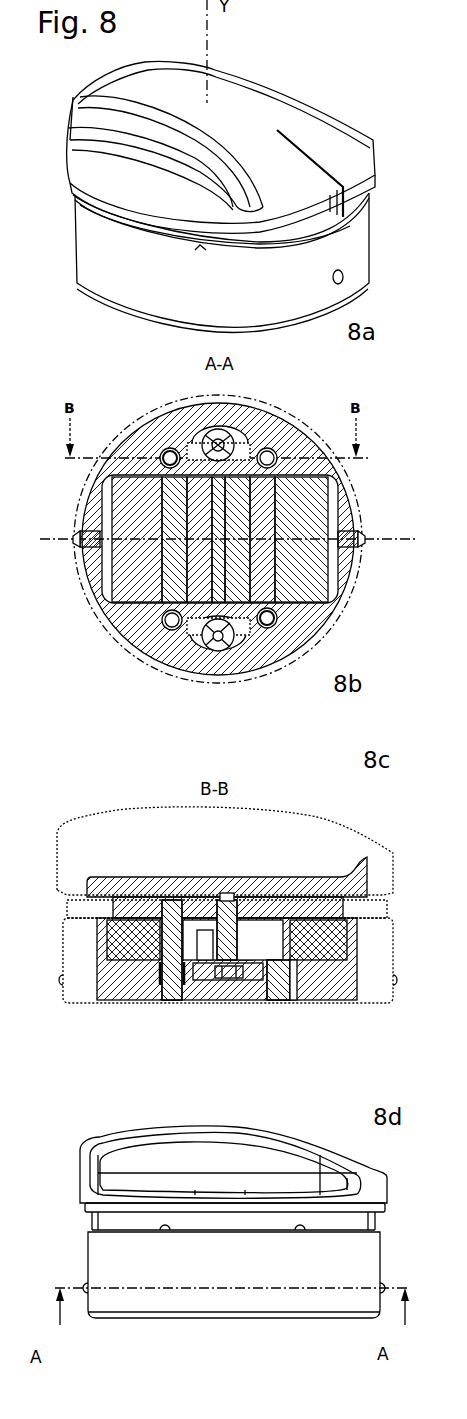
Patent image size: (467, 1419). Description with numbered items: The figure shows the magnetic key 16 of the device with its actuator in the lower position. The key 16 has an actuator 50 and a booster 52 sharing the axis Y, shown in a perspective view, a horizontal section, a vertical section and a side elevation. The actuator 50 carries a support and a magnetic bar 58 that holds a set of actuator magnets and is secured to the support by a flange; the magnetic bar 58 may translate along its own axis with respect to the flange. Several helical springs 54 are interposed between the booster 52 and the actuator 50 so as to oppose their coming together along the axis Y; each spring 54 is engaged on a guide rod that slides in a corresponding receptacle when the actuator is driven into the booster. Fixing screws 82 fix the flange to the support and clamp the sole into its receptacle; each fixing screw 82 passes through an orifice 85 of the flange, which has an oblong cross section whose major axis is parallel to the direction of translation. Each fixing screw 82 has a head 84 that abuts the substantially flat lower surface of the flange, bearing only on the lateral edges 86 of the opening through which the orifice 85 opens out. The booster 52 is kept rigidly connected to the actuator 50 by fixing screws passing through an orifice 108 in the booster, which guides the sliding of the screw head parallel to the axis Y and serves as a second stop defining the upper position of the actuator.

The key 16 is at (333, 80).
The actuator 50 is at (89, 172).
The booster 52 is at (93, 257).
The magnetic bar 58 is at (307, 518).
The helical spring 54 is at (160, 970).
The fixing screw 82 is at (233, 947).
The head 84 is at (222, 643).
The orifice 85 is at (240, 645).
The lateral edges 86 is at (200, 643).
The orifice 108 is at (293, 980).